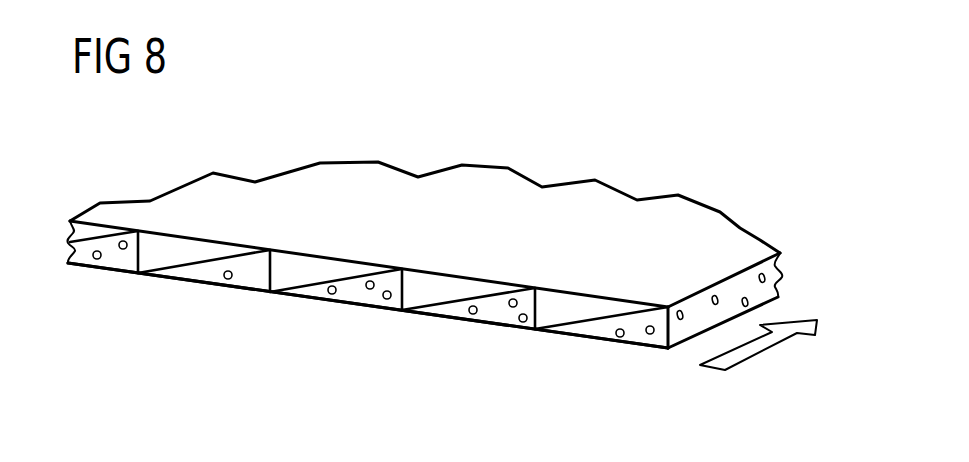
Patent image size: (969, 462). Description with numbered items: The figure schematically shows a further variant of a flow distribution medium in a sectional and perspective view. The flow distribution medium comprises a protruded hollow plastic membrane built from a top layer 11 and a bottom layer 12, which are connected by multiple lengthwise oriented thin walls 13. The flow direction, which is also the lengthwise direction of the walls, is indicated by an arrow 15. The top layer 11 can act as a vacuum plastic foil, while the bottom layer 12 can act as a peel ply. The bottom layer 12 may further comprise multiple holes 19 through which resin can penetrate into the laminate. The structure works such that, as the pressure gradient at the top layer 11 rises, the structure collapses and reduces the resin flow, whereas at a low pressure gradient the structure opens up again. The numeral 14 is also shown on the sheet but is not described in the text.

The top layer 11 is at (510, 200).
The bottom layer 12 is at (508, 327).
The lengthwise oriented thin walls 13 is at (305, 272).
The upper cover layer 14 is at (249, 163).
The arrow 15 is at (747, 350).
The holes 19 is at (618, 333).